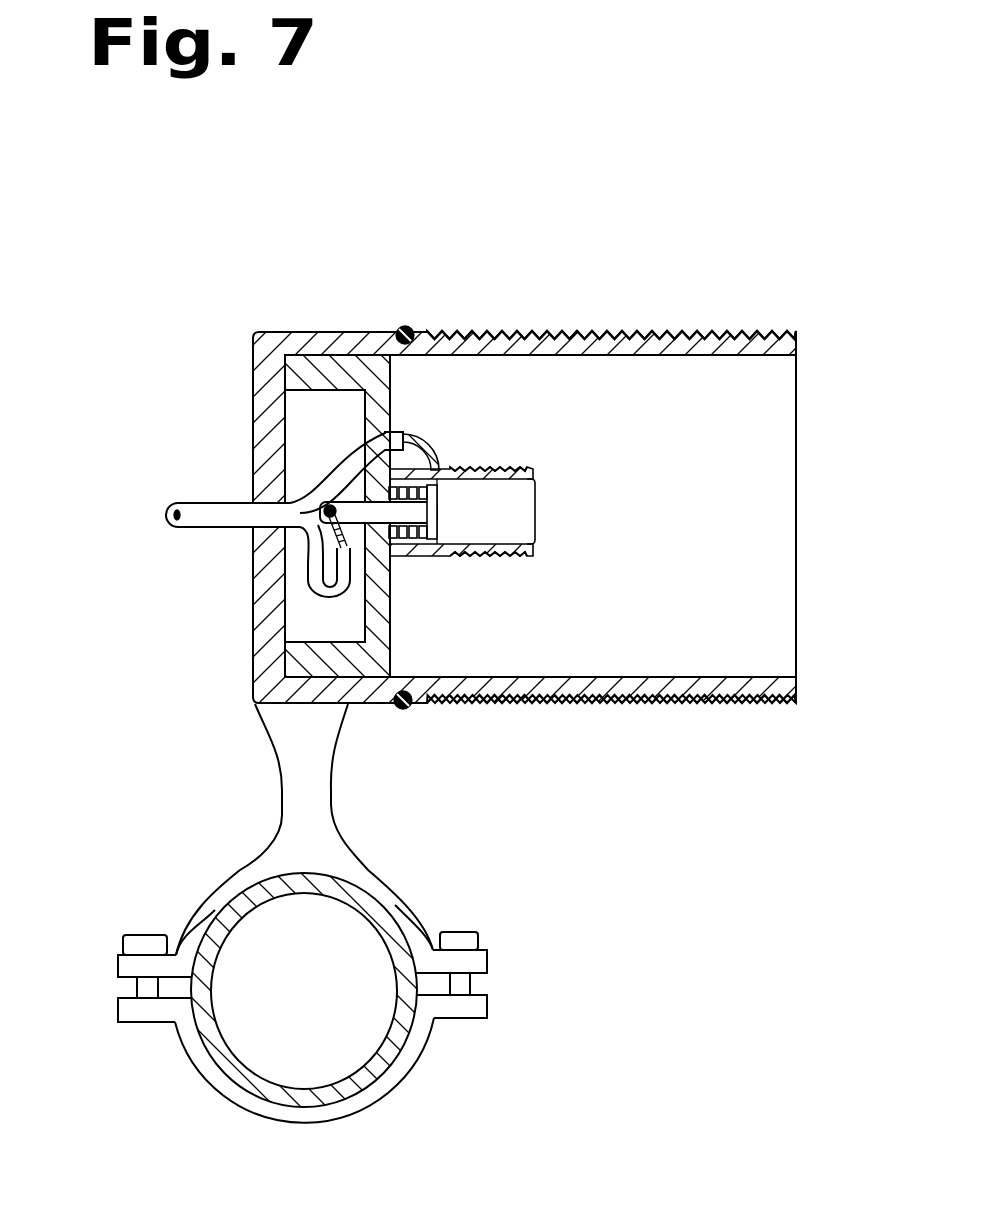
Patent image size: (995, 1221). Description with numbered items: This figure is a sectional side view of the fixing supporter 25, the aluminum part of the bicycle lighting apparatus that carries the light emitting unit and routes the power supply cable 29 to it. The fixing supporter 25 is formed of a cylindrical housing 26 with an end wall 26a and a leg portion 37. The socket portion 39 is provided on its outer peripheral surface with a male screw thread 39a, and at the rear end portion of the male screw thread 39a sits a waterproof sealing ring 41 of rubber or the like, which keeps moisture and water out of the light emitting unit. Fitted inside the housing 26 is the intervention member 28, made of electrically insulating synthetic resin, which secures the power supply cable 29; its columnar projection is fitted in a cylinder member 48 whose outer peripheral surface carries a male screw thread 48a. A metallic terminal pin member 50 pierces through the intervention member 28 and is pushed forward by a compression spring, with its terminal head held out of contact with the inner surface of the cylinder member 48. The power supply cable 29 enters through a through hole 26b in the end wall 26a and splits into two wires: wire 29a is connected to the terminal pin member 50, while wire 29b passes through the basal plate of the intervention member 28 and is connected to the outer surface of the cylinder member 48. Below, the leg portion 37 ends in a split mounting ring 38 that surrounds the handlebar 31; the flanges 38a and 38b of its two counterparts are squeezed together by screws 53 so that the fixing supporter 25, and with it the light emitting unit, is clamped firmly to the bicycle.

The fixing supporter 25 is at (231, 345).
The cylindrical housing 26 is at (306, 334).
The end wall 26a is at (260, 626).
The through hole 26b is at (249, 505).
The intervention member 28 is at (393, 614).
The power supply cable 29 is at (186, 502).
The wire 29a is at (290, 545).
The wire 29b is at (418, 442).
The handlebar 31 is at (380, 1062).
The leg portion 37 is at (292, 778).
The split mounting ring 38 is at (420, 907).
The flange 38a is at (120, 963).
The flange 38b is at (145, 1010).
The socket portion 39 is at (798, 333).
The male screw thread 39a is at (723, 328).
The waterproof sealing ring 41 is at (406, 326).
The cylinder member 48 is at (522, 468).
The male screw thread 48a is at (545, 553).
The terminal pin member 50 is at (430, 465).
The screws 53 is at (143, 943).